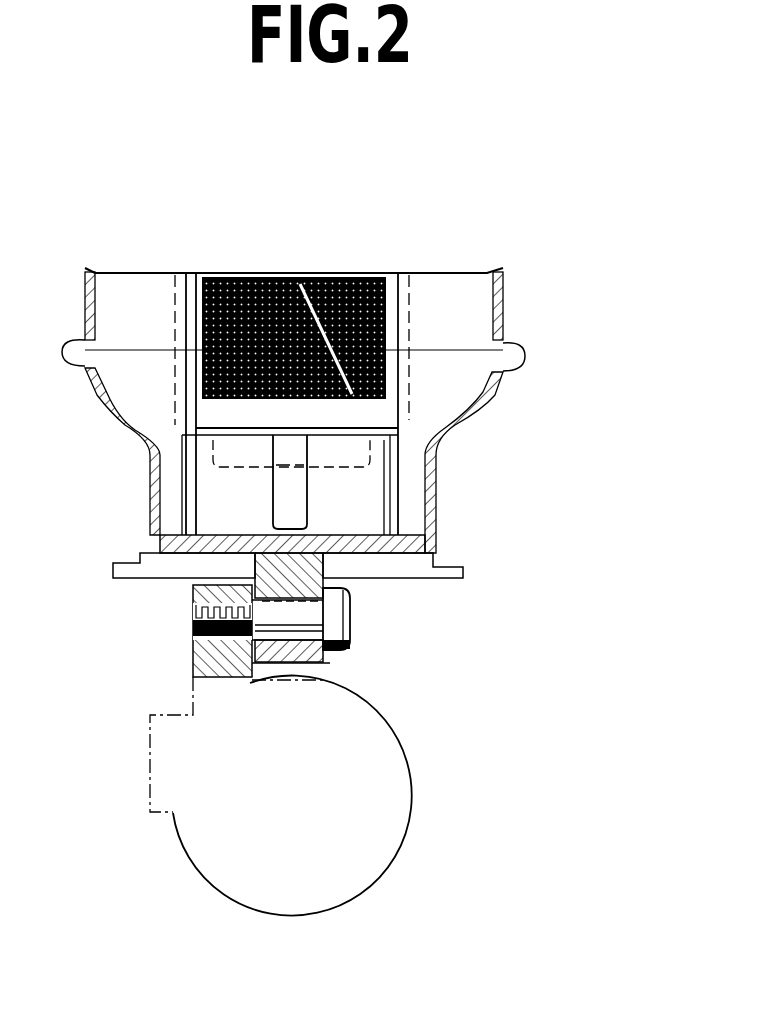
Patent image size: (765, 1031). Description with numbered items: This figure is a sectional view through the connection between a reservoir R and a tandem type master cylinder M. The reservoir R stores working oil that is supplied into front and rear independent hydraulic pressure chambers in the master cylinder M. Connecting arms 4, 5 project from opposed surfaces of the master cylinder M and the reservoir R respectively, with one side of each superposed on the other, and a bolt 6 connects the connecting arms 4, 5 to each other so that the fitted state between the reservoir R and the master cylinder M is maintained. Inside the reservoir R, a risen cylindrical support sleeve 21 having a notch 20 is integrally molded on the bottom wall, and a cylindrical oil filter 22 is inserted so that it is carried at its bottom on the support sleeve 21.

The reservoir R is at (512, 316).
The tandem type master cylinder M is at (397, 755).
The connecting arm 4 is at (190, 658).
The connecting arm 5 is at (327, 665).
The bolt 6 is at (340, 620).
The notch 20 is at (283, 503).
The support sleeve 21 is at (360, 508).
The oil filter 22 is at (365, 273).